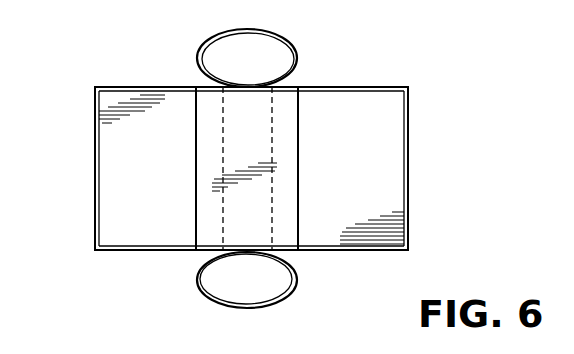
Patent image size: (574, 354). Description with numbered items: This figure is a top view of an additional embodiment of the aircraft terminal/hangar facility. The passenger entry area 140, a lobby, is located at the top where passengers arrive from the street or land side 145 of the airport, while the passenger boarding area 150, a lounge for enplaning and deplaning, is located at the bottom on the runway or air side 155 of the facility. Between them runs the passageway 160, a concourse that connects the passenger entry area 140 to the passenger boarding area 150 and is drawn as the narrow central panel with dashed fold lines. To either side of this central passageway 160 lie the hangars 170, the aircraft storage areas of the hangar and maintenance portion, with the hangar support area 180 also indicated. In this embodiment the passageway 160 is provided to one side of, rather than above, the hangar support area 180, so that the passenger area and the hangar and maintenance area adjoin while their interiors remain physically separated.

The passenger entry area 140 is at (282, 67).
The land side 145 is at (319, 33).
The passenger boarding area 150 is at (277, 287).
The air side 155 is at (283, 344).
The passageway 160 is at (230, 233).
The hangars 170 is at (95, 203).
The hangar support area 180 is at (285, 238).